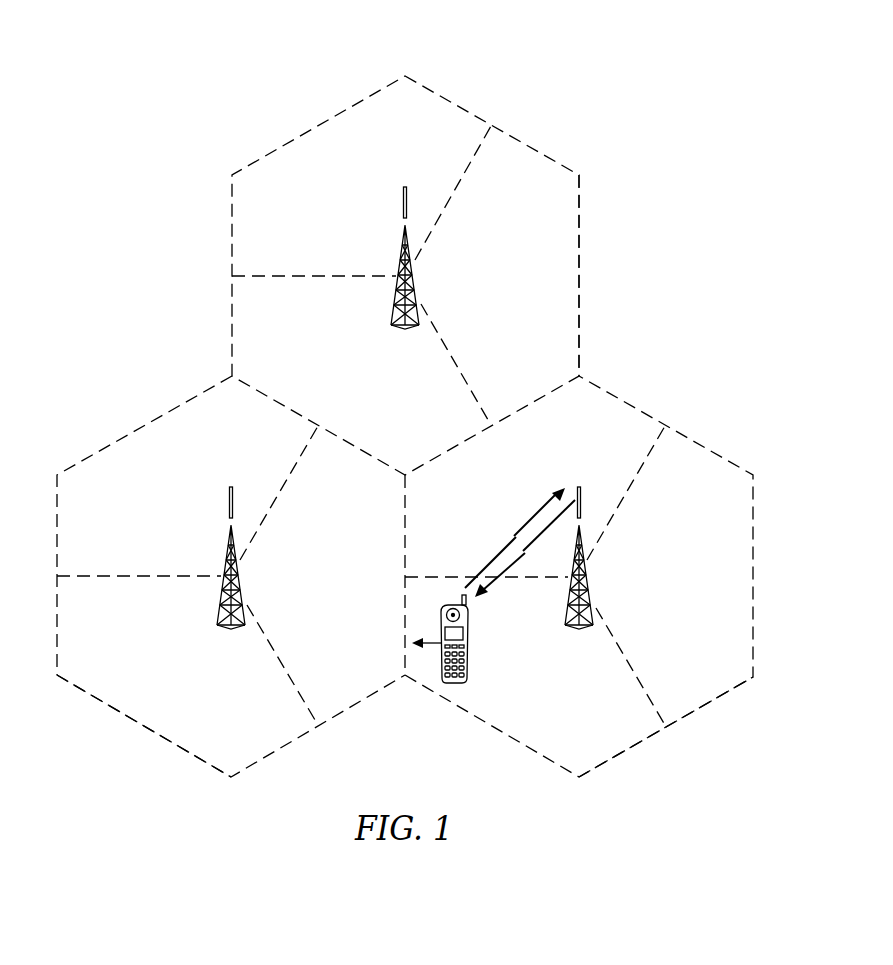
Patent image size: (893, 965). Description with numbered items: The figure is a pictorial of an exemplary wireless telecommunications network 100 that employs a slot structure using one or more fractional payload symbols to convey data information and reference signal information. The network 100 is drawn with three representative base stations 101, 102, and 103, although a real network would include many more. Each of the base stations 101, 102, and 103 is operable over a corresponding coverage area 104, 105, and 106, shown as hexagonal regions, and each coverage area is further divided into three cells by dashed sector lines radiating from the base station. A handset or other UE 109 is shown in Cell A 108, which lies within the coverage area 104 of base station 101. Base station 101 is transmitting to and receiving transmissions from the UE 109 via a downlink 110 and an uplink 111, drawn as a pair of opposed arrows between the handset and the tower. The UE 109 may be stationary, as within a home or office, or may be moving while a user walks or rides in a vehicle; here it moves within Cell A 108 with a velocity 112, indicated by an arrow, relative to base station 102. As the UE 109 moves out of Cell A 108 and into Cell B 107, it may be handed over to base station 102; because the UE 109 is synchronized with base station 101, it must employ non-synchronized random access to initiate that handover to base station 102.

The wireless telecommunications network 100 is at (570, 80).
The base station 101 is at (592, 588).
The base station 102 is at (230, 542).
The base station 103 is at (404, 240).
The coverage area 104 is at (698, 708).
The coverage area 105 is at (141, 727).
The coverage area 106 is at (580, 277).
The Cell B 107 is at (362, 675).
The Cell A 108 is at (583, 737).
The UE 109 is at (468, 652).
The downlink 110 is at (503, 570).
The uplink 111 is at (527, 523).
The velocity 112 is at (433, 643).